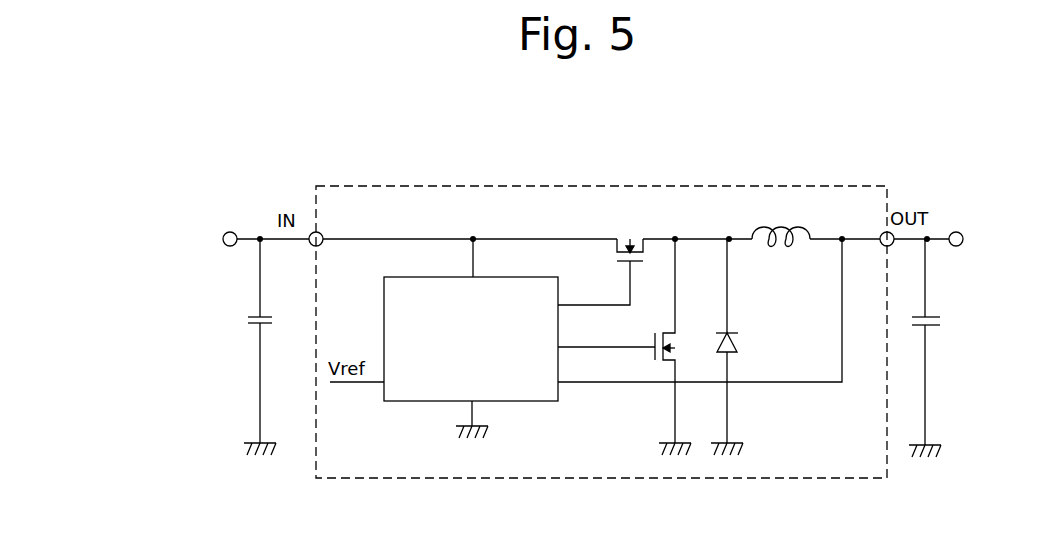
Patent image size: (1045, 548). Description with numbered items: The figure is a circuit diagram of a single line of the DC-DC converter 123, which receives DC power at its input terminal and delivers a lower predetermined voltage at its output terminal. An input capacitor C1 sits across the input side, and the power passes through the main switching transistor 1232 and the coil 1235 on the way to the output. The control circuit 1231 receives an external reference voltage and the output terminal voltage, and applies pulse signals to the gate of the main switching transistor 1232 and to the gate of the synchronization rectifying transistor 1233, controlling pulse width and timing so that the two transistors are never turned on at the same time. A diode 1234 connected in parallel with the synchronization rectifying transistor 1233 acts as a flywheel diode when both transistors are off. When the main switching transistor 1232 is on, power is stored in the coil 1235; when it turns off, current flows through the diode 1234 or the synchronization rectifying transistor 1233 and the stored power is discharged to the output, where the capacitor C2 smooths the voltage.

The DC-DC converter 123 is at (606, 186).
The control circuit 1231 is at (503, 277).
The main switching transistor 1232 is at (626, 236).
The synchronization rectifying transistor 1233 is at (678, 342).
The diode 1234 is at (738, 345).
The coil 1235 is at (768, 228).
The input capacitor C1 is at (276, 341).
The capacitor C2 is at (940, 342).